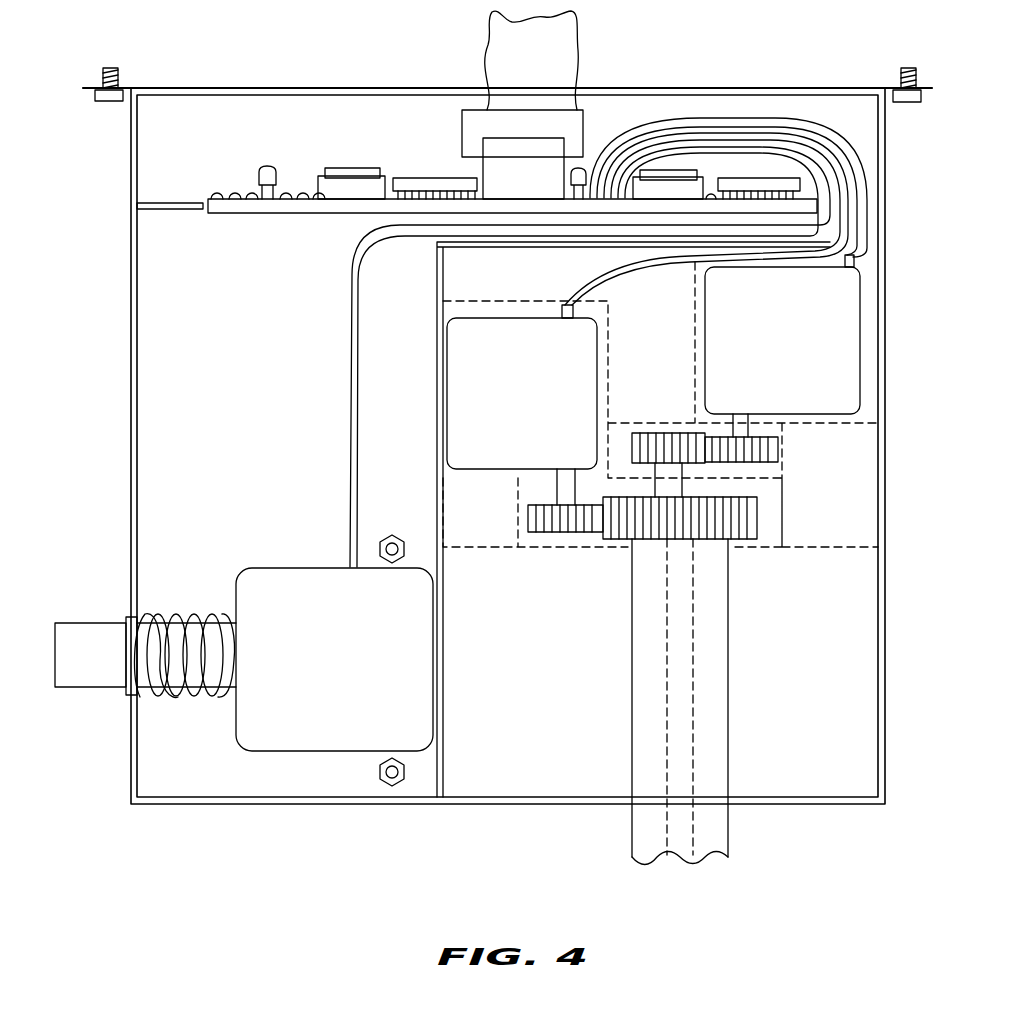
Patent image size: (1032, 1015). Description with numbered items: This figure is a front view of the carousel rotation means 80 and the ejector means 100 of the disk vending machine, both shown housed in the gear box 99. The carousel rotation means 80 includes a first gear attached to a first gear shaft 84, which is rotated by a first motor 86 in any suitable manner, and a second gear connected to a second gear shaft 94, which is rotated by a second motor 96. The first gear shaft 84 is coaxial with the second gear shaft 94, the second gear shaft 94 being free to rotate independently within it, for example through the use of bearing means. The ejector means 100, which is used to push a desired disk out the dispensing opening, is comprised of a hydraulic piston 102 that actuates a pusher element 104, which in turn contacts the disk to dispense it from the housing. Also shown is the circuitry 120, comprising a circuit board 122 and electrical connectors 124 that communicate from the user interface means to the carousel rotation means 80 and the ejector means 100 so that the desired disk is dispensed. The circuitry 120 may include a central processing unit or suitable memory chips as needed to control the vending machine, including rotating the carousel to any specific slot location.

The gear box 99 is at (733, 88).
The circuitry 120 is at (412, 152).
The circuit board 122 is at (215, 197).
The electrical connectors 124 is at (583, 56).
The first motor 86 is at (537, 407).
The second motor 96 is at (798, 352).
The carousel rotation means 80 is at (760, 492).
The first gear shaft 84 is at (726, 820).
The second gear shaft 94 is at (676, 816).
The hydraulic piston 102 is at (358, 679).
The ejector means 100 is at (123, 604).
The pusher element 104 is at (84, 670).